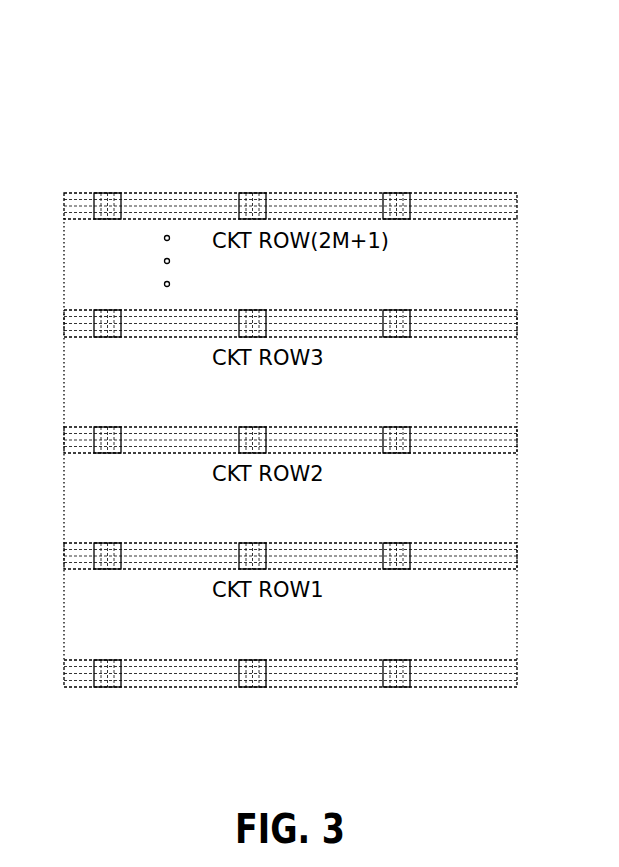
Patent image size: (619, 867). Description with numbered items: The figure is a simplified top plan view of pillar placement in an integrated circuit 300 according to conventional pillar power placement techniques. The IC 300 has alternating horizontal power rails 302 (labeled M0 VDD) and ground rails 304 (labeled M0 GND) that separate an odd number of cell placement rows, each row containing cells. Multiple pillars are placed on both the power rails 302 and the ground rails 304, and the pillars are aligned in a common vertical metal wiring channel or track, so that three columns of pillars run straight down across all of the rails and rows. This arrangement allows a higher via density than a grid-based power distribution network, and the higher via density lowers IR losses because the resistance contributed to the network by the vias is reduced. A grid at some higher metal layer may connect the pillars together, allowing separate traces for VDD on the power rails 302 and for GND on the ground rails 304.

The integrated circuit 300 is at (476, 63).
The power rail 302 is at (517, 317).
The ground rail 304 is at (517, 200).